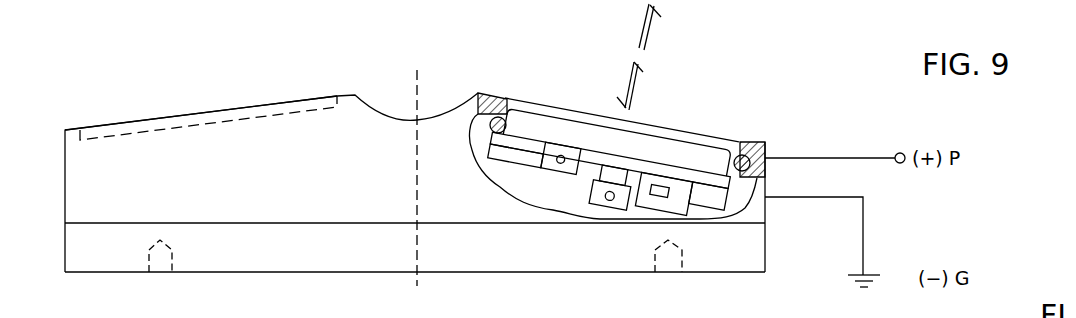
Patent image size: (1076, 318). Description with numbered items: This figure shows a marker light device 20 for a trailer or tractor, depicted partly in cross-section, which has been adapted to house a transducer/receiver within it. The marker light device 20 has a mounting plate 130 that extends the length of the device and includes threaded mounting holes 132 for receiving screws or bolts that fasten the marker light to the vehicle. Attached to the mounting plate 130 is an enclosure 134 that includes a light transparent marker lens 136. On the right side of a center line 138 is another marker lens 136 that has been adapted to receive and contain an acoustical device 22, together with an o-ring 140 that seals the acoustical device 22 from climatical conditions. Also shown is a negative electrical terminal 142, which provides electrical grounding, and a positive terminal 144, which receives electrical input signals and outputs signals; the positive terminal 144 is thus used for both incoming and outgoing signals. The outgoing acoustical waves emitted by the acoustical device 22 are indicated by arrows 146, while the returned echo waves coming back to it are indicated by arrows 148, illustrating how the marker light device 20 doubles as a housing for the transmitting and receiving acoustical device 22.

The marker light device 20 is at (384, 284).
The acoustical device 22 is at (698, 122).
The mounting plate 130 is at (476, 273).
The threaded mounting holes 132 is at (160, 272).
The enclosure 134 is at (225, 68).
The light transparent marker lens 136 is at (280, 100).
The center line 138 is at (417, 112).
The o-ring 140 is at (492, 130).
The negative electrical terminal 142 is at (560, 168).
The positive terminal 144 is at (603, 190).
The arrows indicating outgoing acoustical waves 146 is at (650, 42).
The arrows indicating returned echo waves 148 is at (640, 46).